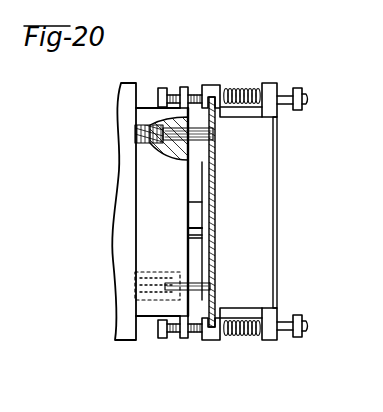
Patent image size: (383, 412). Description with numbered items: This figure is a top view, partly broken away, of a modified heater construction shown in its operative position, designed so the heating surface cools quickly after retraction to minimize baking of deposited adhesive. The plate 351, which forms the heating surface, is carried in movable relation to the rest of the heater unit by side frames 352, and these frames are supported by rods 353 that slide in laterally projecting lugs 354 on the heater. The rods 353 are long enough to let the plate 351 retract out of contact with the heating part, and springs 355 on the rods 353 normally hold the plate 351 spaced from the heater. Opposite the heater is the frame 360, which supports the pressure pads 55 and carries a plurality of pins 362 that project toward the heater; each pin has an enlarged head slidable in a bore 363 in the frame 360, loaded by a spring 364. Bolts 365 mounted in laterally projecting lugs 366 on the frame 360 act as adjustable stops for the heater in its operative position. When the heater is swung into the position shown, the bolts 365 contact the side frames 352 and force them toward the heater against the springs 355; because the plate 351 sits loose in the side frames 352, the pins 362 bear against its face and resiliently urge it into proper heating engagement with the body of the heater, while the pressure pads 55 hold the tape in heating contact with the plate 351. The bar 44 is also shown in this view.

The frame bar 44 is at (277, 203).
The pressure pads 55 is at (200, 236).
The plate 351 is at (217, 150).
The side frames 352 is at (212, 86).
The rods 353 is at (310, 98).
The lugs 354 is at (266, 322).
The springs 355 is at (250, 90).
The frame 360 is at (143, 188).
The pins 362 is at (217, 142).
The bores 363 is at (165, 150).
The springs 364 is at (133, 127).
The bolts 365 is at (172, 88).
The lugs 366 is at (186, 88).